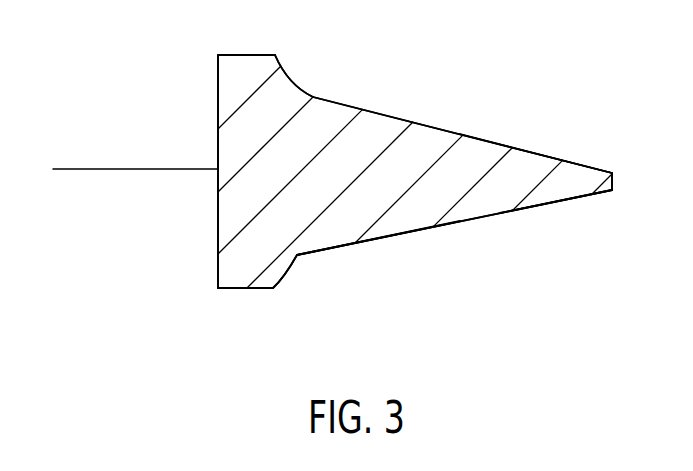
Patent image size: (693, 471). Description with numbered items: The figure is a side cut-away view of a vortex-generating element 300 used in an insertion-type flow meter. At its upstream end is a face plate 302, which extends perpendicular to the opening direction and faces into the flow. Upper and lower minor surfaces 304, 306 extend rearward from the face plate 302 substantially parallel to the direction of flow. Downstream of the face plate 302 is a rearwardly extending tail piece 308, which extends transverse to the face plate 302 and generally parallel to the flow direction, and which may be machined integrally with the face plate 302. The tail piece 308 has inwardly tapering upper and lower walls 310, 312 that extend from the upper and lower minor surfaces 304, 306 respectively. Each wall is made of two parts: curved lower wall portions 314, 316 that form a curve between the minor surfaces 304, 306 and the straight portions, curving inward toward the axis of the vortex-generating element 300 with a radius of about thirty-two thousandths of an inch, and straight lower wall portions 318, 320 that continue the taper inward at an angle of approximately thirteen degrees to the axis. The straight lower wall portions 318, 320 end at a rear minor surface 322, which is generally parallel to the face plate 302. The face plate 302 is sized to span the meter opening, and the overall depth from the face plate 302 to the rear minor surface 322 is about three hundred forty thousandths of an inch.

The vortex-generating element 300 is at (352, 193).
The face plate 302 is at (218, 110).
The upper minor surface 304 is at (242, 55).
The lower minor surface 306 is at (240, 288).
The tail piece 308 is at (482, 218).
The upper wall 310 is at (440, 127).
The lower wall 312 is at (423, 230).
The curved lower wall portion 314 is at (285, 74).
The curved lower wall portion 316 is at (292, 262).
The straight lower wall portion 318 is at (492, 142).
The straight lower wall portion 320 is at (530, 205).
The rear minor surface 322 is at (612, 173).